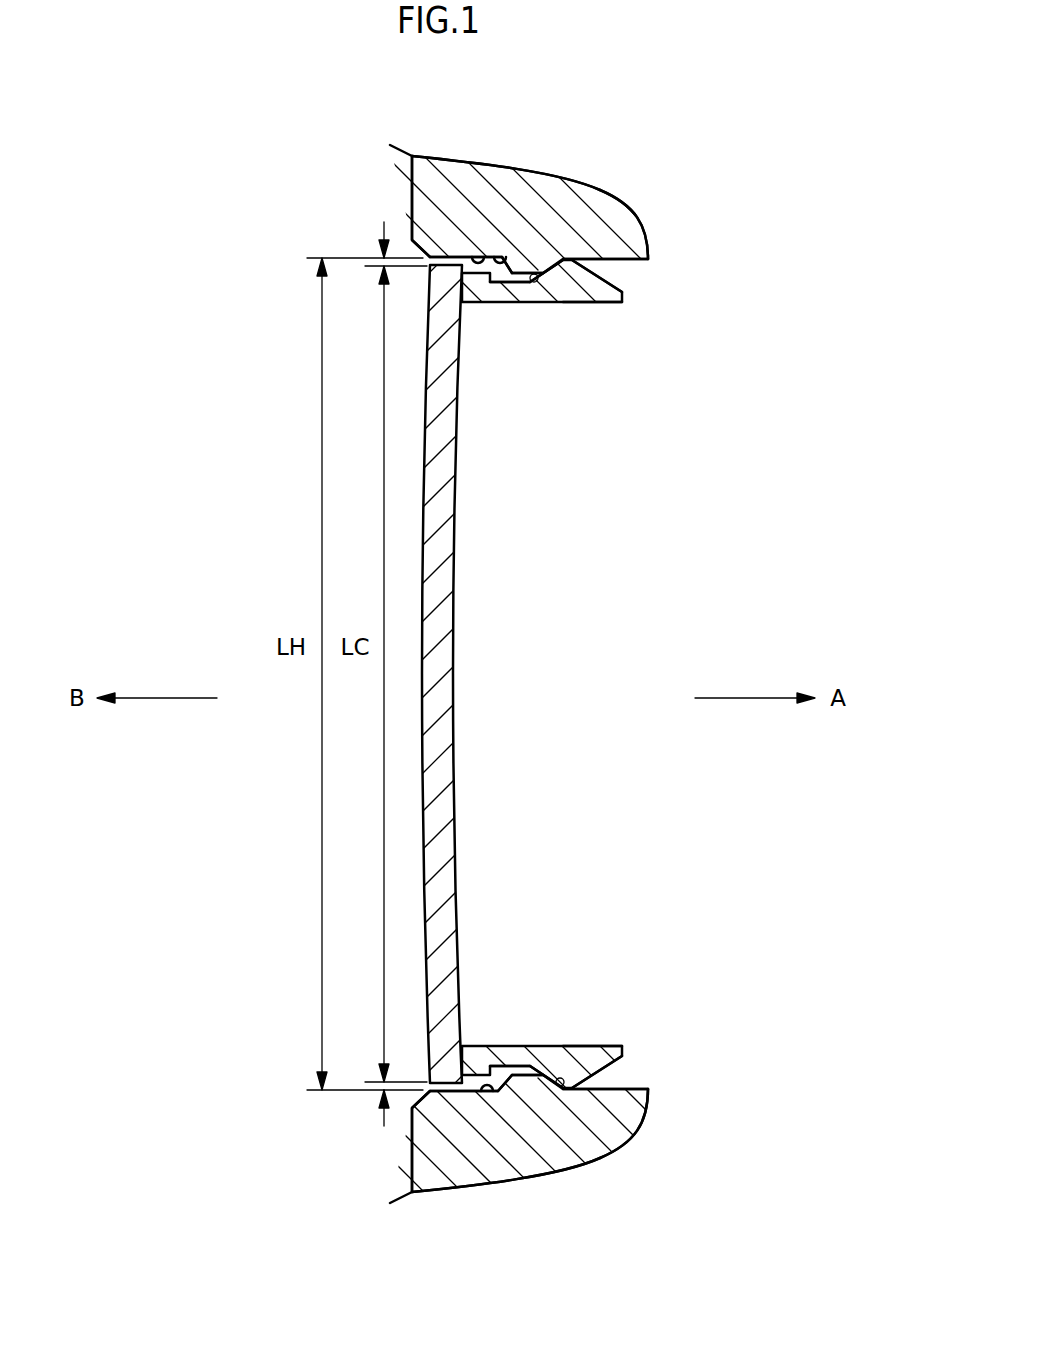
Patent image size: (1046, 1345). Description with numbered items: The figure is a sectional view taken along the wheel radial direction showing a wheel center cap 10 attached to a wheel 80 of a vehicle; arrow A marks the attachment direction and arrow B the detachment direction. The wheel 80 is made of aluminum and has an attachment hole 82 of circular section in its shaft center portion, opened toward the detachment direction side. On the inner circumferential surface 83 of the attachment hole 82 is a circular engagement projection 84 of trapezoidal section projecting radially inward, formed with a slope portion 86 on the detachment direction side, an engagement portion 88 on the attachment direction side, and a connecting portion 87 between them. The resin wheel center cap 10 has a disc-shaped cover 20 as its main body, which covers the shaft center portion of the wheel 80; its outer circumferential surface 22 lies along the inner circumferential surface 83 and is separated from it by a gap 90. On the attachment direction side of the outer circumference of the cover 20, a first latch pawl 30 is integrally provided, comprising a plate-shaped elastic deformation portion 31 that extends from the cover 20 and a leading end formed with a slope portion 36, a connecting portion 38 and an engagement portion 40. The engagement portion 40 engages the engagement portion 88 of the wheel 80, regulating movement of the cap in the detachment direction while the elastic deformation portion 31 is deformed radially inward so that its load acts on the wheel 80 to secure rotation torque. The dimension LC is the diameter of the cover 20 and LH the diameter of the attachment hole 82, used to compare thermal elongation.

The wheel center cap 10 is at (541, 699).
The cover 20 is at (458, 452).
The outer circumferential surface 22 is at (444, 257).
The first latch pawl 30 is at (573, 303).
The elastic deformation portion 31 is at (532, 282).
The slope portion 36 is at (615, 283).
The connecting portion 38 is at (617, 245).
The engagement portion 40 is at (558, 303).
The wheel 80 is at (645, 220).
The attachment hole 82 is at (504, 258).
The inner circumferential surface 83 is at (527, 268).
The engagement projection 84 is at (567, 177).
The slope portion 86 is at (508, 272).
The connecting portion 87 is at (536, 282).
The engagement portion 88 is at (597, 302).
The gap 90 is at (380, 262).